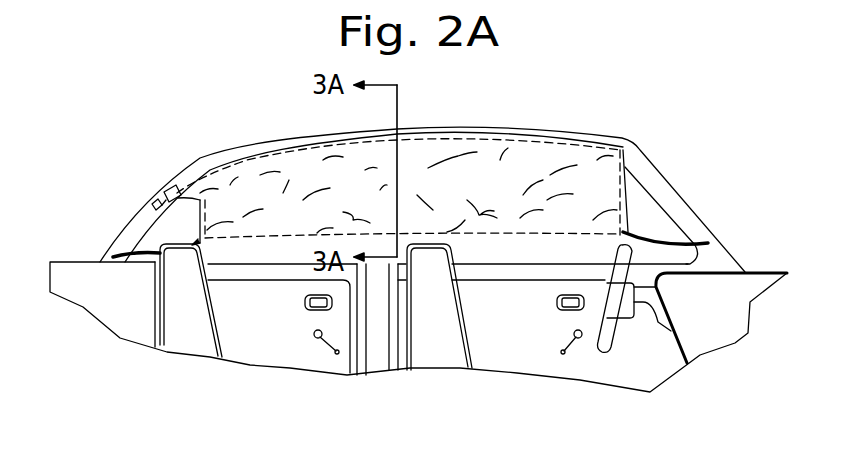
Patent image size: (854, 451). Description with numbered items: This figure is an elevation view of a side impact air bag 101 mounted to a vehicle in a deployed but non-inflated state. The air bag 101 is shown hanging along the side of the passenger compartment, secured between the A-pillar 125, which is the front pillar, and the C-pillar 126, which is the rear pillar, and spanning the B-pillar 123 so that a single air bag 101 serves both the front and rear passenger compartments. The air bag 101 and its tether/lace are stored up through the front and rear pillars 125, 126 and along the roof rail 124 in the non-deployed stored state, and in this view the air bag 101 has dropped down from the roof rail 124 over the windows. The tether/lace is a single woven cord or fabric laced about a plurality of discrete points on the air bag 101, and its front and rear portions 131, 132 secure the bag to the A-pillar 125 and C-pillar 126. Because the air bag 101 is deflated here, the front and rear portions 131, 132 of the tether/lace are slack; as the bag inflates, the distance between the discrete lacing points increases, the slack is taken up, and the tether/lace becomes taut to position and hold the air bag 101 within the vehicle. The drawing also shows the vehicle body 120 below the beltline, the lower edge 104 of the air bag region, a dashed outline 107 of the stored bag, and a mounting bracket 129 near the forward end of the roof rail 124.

The side impact air bag 101 is at (165, 232).
The lower edge of airbag / door frame 104 is at (523, 240).
The airbag module outline 107 is at (495, 138).
The vehicle body 120 is at (207, 365).
The B-pillar 123 is at (382, 345).
The roof rail 124 is at (208, 157).
The A-pillar 125 is at (658, 187).
The C-pillar 126 is at (103, 255).
The mounting bracket 129 is at (152, 198).
The front portion of the tether/lace 131 is at (703, 245).
The rear portion of the tether/lace 132 is at (200, 232).